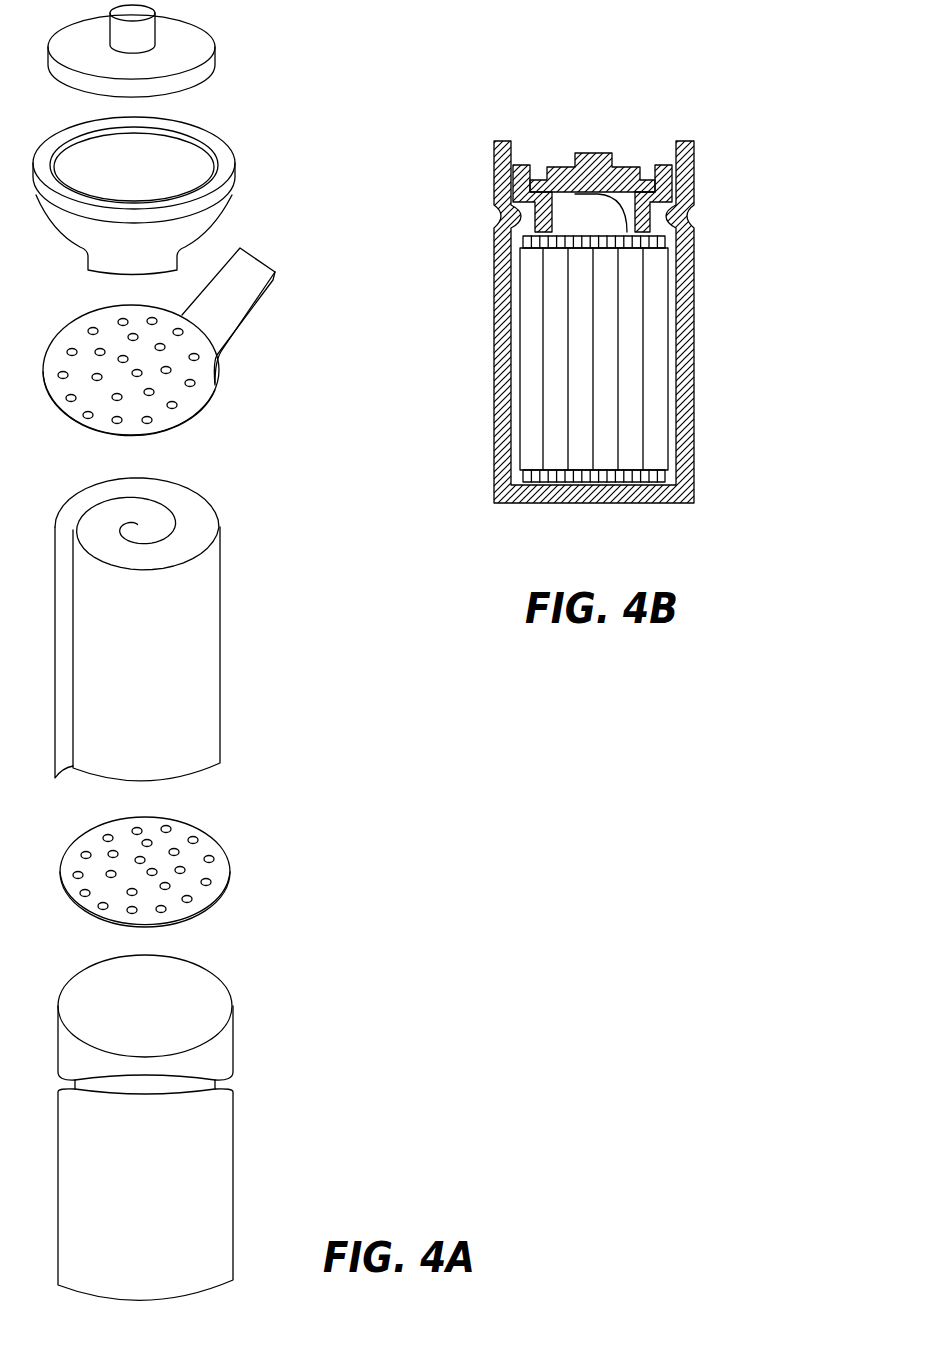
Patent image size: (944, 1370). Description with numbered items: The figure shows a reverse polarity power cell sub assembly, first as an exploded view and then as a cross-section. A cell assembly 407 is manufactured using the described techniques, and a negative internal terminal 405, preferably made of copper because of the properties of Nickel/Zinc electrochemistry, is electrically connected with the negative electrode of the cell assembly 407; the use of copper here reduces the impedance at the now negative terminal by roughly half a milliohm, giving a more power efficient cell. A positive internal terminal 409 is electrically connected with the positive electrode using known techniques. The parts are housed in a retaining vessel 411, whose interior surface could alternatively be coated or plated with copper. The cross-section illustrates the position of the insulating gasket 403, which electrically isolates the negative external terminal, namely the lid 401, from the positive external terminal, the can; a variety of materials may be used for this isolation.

In FIG. 4A, the lid 401 is at (230, 42).
In FIG. 4B, the lid 401 is at (593, 152).
In FIG. 4A, the insulating gasket 403 is at (247, 147).
In FIG. 4B, the insulating gasket 403 is at (522, 165).
In FIG. 4A, the negative internal terminal 405 is at (270, 330).
In FIG. 4B, the negative internal terminal 405 is at (645, 243).
In FIG. 4A, the cell assembly 407 is at (242, 540).
In FIG. 4B, the cell assembly 407 is at (628, 387).
In FIG. 4A, the positive internal terminal 409 is at (242, 845).
In FIG. 4B, the positive internal terminal 409 is at (592, 482).
In FIG. 4A, the retaining vessel 411 is at (253, 1017).
In FIG. 4B, the retaining vessel 411 is at (695, 158).